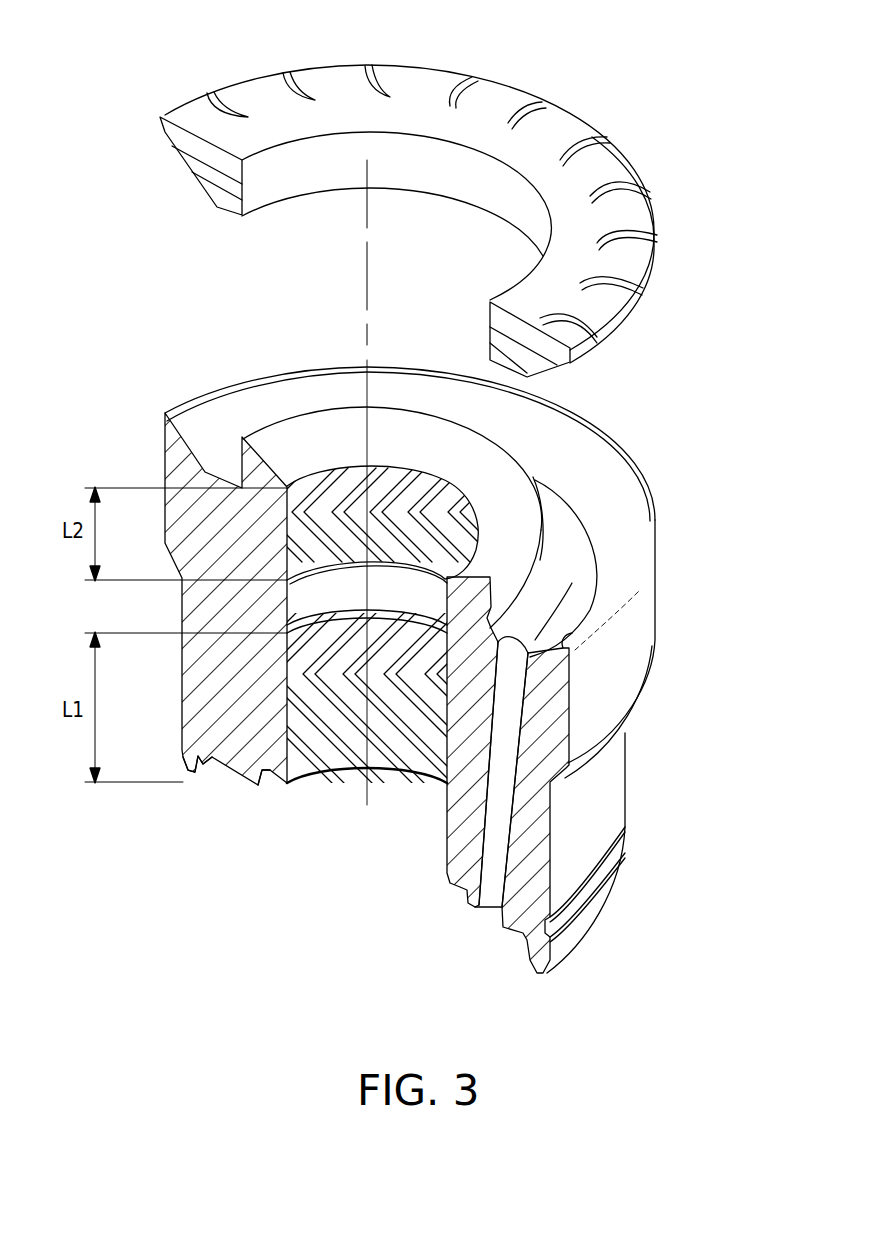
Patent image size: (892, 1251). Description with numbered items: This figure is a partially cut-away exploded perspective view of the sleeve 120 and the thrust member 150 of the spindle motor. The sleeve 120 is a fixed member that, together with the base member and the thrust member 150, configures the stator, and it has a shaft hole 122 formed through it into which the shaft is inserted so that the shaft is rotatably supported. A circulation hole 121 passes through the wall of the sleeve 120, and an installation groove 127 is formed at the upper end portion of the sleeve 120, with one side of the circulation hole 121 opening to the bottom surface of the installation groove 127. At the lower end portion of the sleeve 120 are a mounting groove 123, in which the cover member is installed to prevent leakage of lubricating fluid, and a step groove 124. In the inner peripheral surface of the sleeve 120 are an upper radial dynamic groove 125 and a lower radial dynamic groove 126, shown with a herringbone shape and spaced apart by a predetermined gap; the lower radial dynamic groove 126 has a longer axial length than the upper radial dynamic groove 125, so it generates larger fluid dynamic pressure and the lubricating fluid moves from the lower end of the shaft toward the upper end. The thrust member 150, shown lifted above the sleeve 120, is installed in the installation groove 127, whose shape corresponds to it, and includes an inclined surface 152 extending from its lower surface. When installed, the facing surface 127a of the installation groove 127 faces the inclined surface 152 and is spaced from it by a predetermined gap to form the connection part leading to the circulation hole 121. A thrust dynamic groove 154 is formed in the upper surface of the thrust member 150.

The sleeve 120 is at (432, 670).
The circulation hole 121 is at (500, 797).
The shaft hole 122 is at (402, 786).
The mounting groove 123 is at (203, 770).
The step groove 124 is at (265, 783).
The upper radial dynamic groove 125 is at (337, 512).
The lower radial dynamic groove 126 is at (327, 654).
The installation groove 127 is at (570, 588).
The facing surface 127a is at (563, 648).
The thrust member 150 is at (367, 193).
The inclined surface 152 is at (178, 152).
The thrust dynamic groove 154 is at (535, 100).